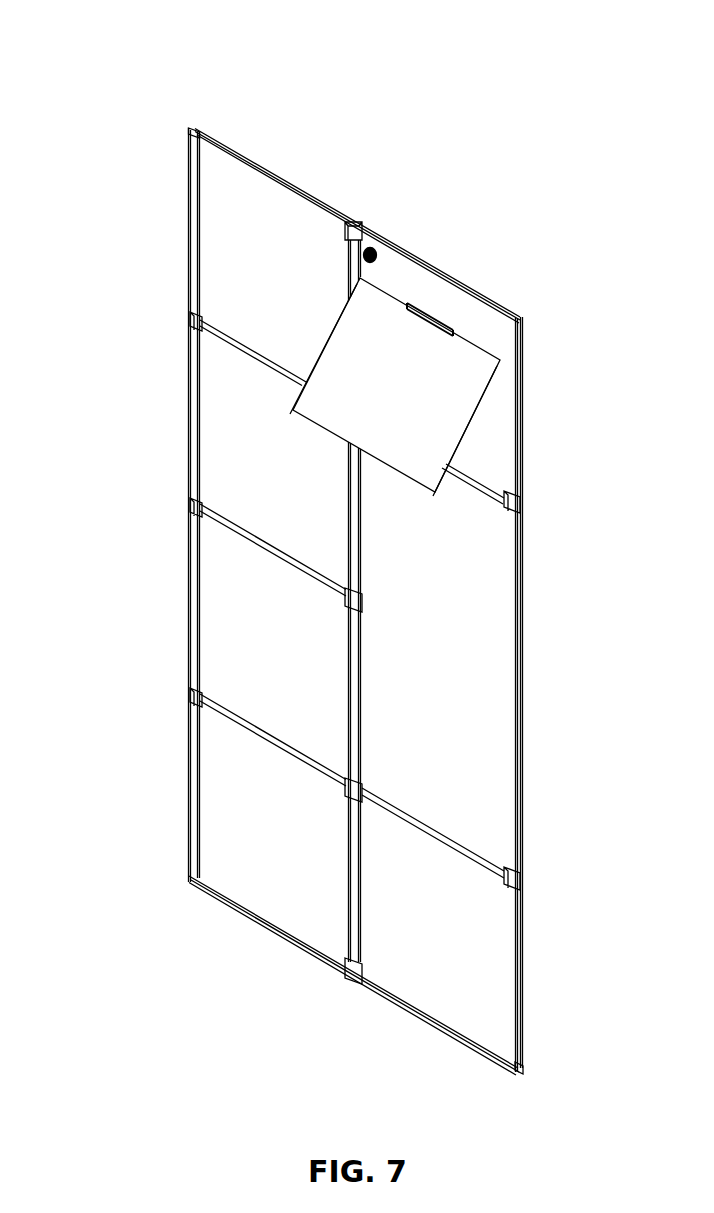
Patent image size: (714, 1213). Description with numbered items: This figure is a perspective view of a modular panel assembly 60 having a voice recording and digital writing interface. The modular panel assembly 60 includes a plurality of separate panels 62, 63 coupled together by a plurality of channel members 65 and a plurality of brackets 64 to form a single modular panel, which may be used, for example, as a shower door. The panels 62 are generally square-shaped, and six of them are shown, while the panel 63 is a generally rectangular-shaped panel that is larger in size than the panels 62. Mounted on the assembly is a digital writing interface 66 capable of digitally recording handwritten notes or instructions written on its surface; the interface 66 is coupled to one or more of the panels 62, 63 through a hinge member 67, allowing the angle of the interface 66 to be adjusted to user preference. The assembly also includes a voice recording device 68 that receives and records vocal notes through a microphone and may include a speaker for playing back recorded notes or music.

The modular panel assembly 60 is at (114, 64).
The panels 62 is at (288, 213).
The panel 63 is at (467, 711).
The brackets 64 is at (195, 322).
The channel members 65 is at (412, 817).
The digital writing interface 66 is at (467, 372).
The hinge member 67 is at (433, 315).
The voice recording device 68 is at (369, 248).